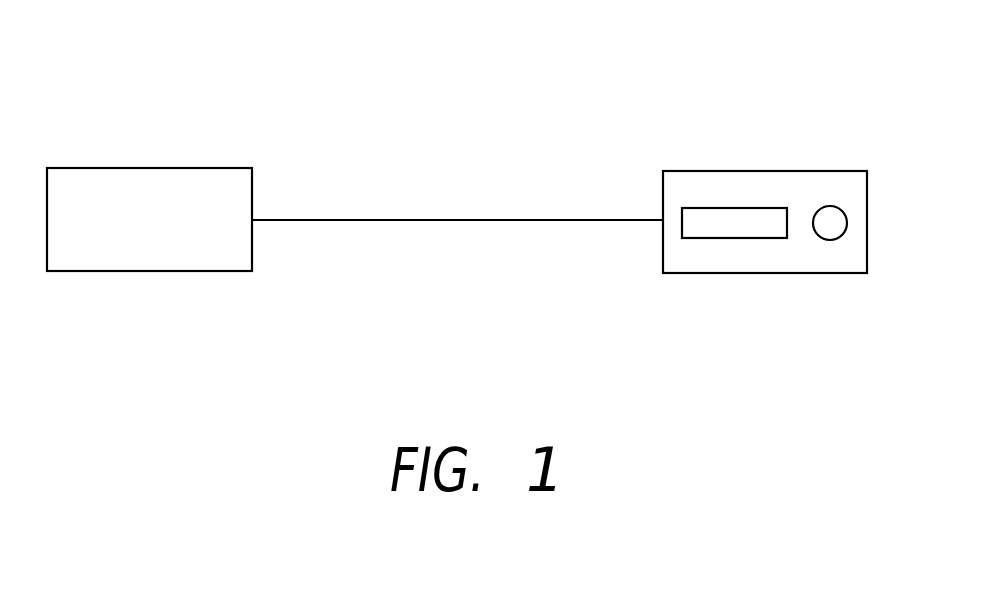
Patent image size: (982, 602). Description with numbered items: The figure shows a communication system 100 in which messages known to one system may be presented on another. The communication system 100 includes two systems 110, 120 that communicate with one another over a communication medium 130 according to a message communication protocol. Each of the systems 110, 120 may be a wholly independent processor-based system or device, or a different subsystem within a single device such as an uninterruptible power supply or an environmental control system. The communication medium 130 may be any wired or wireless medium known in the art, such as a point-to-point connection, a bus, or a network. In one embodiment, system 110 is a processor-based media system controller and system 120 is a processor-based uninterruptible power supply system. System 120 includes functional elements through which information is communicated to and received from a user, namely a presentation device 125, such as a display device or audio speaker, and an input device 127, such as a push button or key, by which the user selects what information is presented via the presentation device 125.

The communication system 100 is at (558, 93).
The system 110 is at (167, 168).
The system 120 is at (713, 169).
The presentation device 125 is at (733, 238).
The input device 127 is at (828, 240).
The communication medium 130 is at (327, 220).